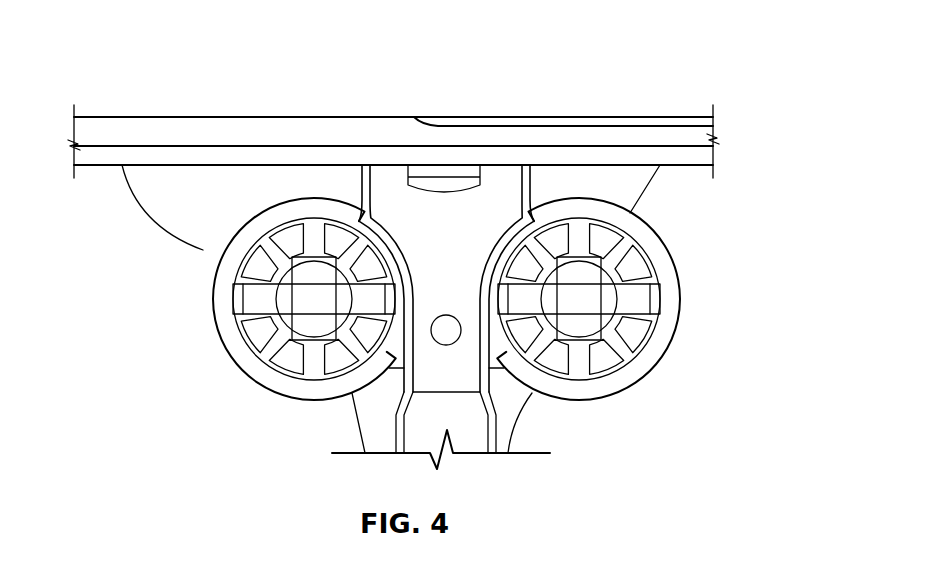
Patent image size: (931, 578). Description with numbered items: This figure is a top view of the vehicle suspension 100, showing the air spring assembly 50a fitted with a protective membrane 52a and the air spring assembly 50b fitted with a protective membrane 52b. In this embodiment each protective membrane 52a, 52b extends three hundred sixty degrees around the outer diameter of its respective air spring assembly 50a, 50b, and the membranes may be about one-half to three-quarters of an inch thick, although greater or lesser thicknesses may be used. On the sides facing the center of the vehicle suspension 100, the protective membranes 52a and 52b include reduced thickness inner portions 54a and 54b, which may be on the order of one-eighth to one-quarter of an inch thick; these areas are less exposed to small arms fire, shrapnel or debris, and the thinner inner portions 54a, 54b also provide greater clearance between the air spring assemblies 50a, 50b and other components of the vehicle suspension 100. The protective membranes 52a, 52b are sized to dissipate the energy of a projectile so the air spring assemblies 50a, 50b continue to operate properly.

The vehicle suspension 100 is at (686, 76).
The air spring assembly 50a is at (268, 350).
The air spring assembly 50b is at (645, 278).
The protective membrane 52a is at (221, 310).
The protective membrane 52b is at (655, 333).
The reduced thickness inner portion 54a is at (372, 218).
The reduced thickness inner portion 54b is at (515, 218).